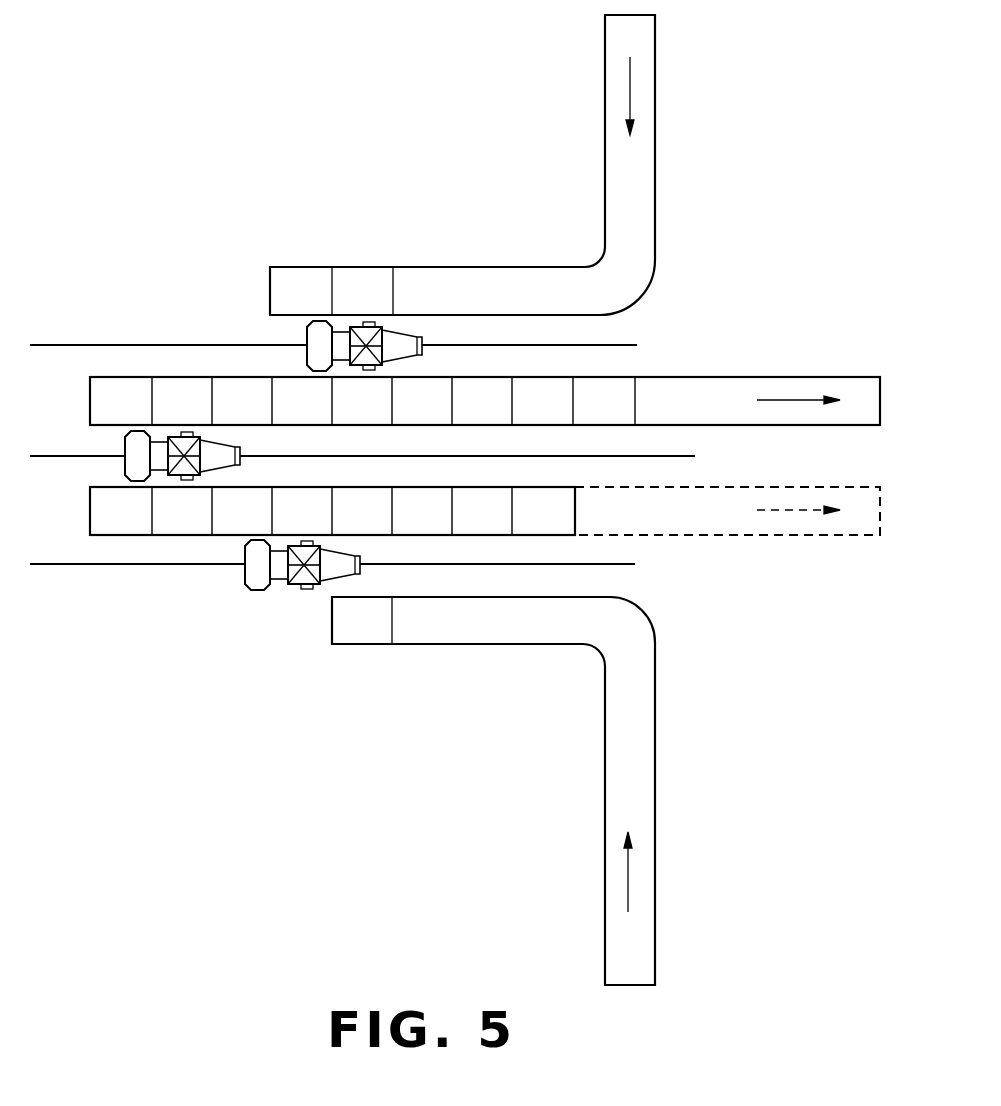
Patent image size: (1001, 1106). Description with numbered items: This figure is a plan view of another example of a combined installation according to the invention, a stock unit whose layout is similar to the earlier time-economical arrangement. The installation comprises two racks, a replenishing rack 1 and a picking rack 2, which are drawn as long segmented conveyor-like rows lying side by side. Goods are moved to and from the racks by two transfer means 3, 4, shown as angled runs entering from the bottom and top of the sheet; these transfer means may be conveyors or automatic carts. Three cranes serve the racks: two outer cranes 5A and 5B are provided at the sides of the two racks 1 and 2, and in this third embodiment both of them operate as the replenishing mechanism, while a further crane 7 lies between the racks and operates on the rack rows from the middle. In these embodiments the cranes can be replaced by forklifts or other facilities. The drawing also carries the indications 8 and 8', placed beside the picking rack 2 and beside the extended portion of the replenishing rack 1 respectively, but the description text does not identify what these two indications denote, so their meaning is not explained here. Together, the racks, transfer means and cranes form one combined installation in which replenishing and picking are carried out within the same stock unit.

The replenishing rack 1 is at (98, 512).
The picking rack 2 is at (98, 402).
The transfer means 3 is at (645, 731).
The transfer means 4 is at (645, 168).
The outer crane 5A is at (317, 348).
The outer crane 5B is at (258, 578).
The crane 7 is at (228, 455).
The conveying direction 8 is at (798, 351).
The alternative conveying direction 8' is at (798, 561).